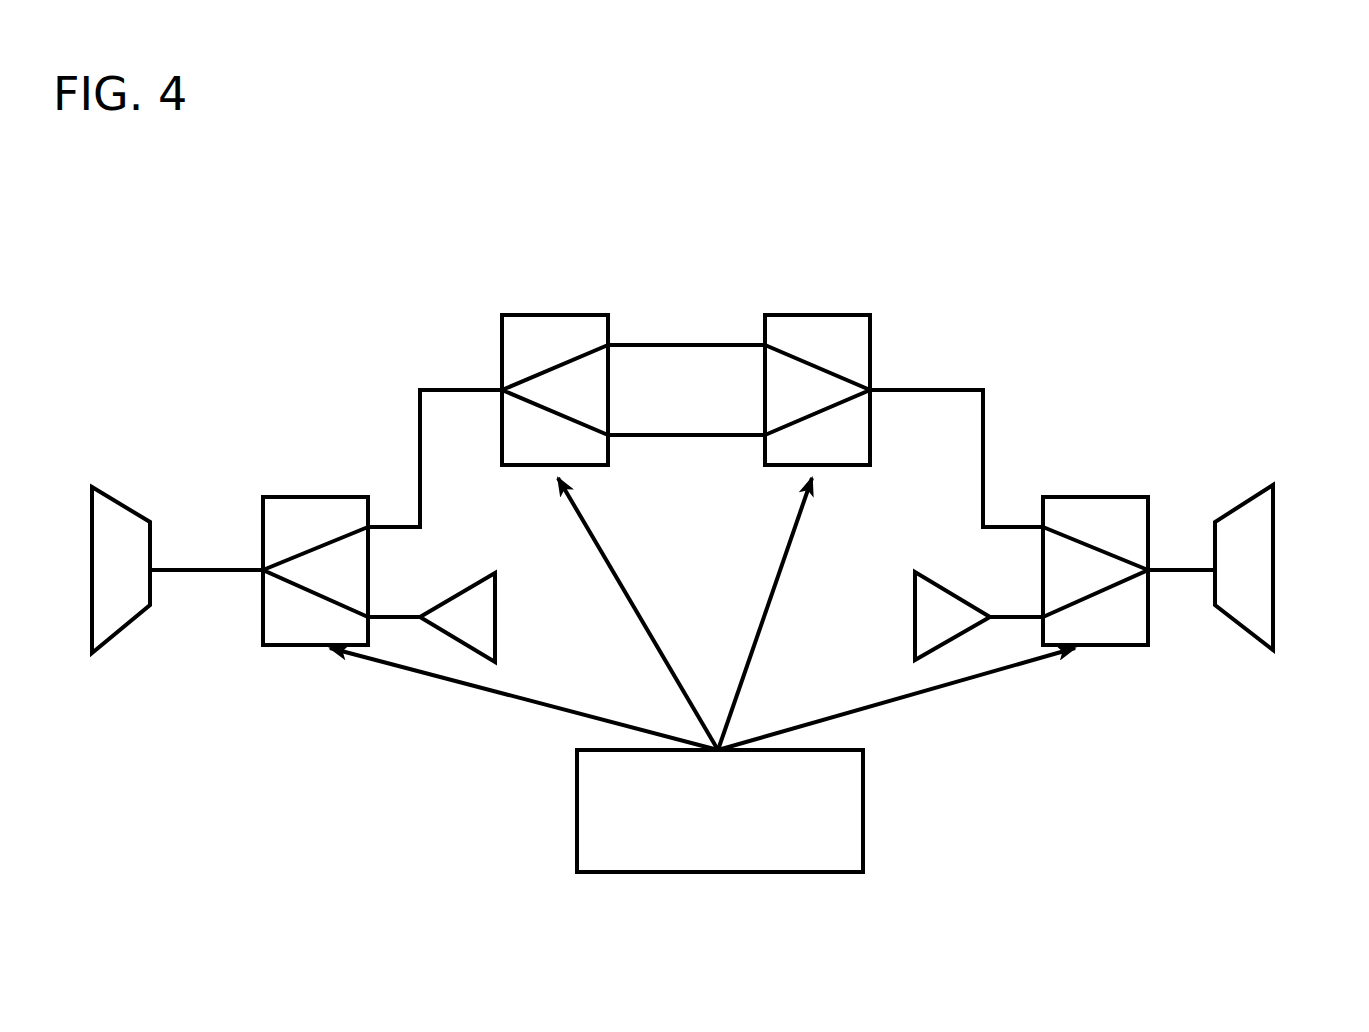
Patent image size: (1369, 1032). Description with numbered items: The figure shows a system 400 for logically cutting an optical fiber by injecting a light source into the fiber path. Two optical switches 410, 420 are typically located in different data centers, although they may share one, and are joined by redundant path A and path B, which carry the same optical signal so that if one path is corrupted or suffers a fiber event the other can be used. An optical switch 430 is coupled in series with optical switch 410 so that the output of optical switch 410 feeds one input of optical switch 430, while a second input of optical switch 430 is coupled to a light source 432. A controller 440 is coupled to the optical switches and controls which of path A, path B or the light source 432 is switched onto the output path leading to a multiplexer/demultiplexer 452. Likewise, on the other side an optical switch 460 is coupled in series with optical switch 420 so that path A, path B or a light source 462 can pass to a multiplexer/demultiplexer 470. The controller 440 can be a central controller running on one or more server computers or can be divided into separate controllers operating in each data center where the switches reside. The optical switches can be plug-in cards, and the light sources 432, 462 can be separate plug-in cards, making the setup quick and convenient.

The system 400 is at (828, 205).
The optical switch 410 is at (567, 465).
The optical switch 420 is at (870, 345).
The optical switch 430 is at (280, 645).
The light source 432 is at (490, 615).
The controller 440 is at (863, 782).
The multiplexer/demultiplexer 452 is at (120, 630).
The optical switch 460 is at (1103, 645).
The light source 462 is at (922, 630).
The multiplexer/demultiplexer 470 is at (1268, 630).